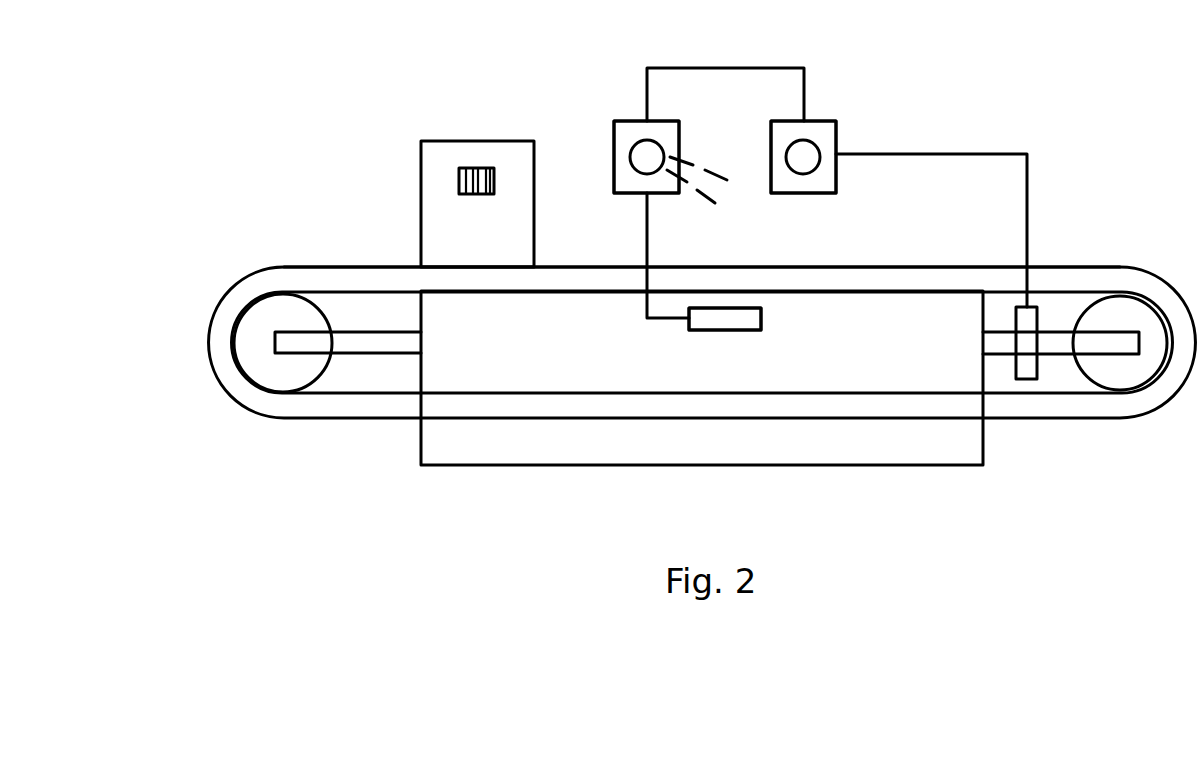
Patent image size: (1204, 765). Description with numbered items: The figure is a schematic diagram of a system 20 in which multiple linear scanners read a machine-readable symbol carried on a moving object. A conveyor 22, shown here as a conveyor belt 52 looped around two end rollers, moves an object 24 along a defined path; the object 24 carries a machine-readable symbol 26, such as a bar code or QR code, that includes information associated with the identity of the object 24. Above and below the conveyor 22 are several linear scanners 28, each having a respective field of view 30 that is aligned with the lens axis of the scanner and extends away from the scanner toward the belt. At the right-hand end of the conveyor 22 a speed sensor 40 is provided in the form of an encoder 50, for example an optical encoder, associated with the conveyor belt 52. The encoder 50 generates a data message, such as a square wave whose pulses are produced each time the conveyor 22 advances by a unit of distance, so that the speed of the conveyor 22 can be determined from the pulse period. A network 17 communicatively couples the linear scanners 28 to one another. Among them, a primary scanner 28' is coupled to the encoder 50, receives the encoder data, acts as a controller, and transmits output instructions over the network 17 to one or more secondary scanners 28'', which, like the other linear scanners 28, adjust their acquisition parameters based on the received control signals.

The network 17 is at (790, 68).
The system 20 is at (960, 476).
The conveyor 22 is at (317, 273).
The object 24 is at (439, 141).
The machine-readable symbol 26 is at (474, 168).
The linear scanner 28 is at (728, 213).
The primary scanner 28' is at (828, 138).
The secondary scanner 28'' is at (654, 201).
The field of view 30 is at (693, 162).
The speed sensor 40 is at (1025, 379).
The encoder 50 is at (1040, 318).
The conveyor belt 52 is at (332, 267).